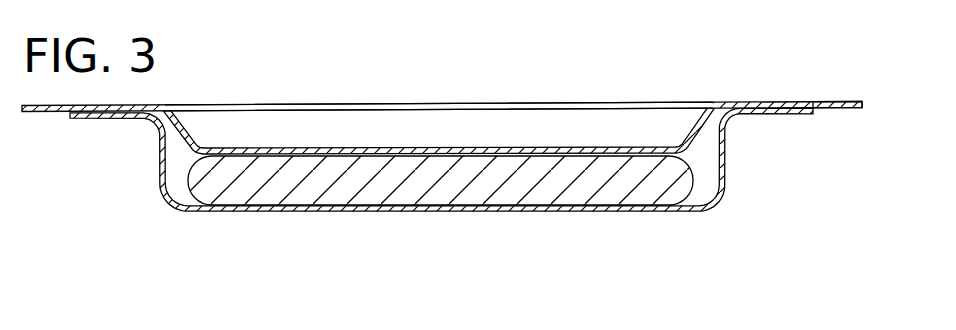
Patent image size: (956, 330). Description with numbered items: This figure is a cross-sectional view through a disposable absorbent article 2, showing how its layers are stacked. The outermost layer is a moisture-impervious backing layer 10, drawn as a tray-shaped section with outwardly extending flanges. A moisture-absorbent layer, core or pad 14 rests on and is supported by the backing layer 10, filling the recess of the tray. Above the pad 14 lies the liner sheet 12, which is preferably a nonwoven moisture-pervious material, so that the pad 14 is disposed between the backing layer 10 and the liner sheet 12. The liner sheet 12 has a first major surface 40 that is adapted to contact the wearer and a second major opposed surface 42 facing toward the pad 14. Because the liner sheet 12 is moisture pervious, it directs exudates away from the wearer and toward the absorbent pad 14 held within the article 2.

The disposable absorbent article 2 is at (775, 216).
The moisture-impervious backing layer 10 is at (530, 213).
The liner sheet 12 is at (591, 148).
The moisture-absorbent pad 14 is at (397, 180).
The first major surface 40 is at (720, 103).
The second major opposed surface 42 is at (840, 109).